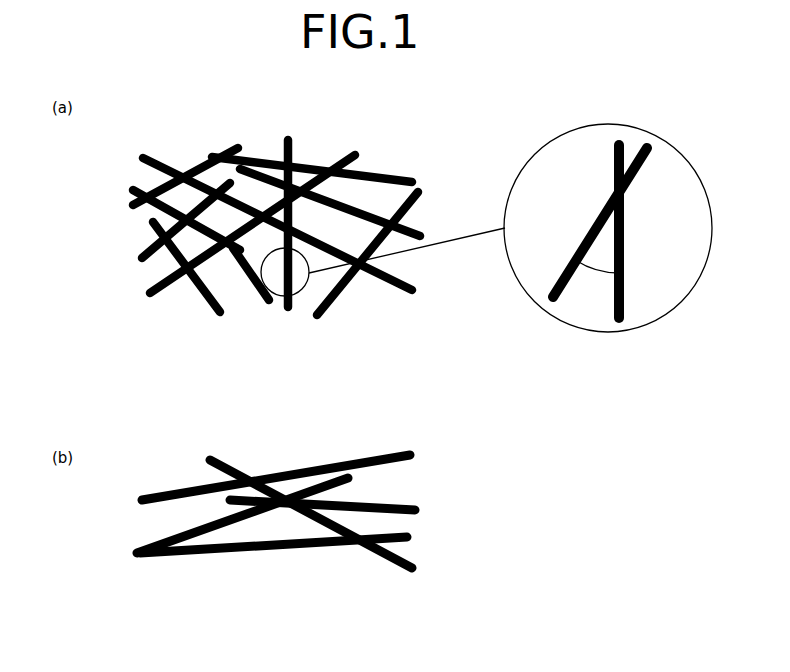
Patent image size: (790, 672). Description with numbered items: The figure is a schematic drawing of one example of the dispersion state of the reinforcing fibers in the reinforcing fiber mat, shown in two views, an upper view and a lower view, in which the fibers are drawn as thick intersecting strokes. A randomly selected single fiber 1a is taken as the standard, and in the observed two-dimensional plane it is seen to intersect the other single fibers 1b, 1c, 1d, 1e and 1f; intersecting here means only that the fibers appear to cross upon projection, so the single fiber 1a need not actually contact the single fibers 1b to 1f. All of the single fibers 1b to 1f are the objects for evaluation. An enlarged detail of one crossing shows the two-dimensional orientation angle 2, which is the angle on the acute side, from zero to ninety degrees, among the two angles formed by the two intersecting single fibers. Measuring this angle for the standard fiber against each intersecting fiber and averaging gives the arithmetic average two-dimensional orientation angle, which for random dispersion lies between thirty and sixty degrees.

The single fiber 1a is at (321, 383).
The single fiber 1b is at (242, 445).
The single fiber 1c is at (332, 377).
The single fiber 1d is at (336, 313).
The single fiber 1e is at (336, 329).
The single fiber 1f is at (324, 379).
The two-dimensional orientation angle 2 is at (608, 228).